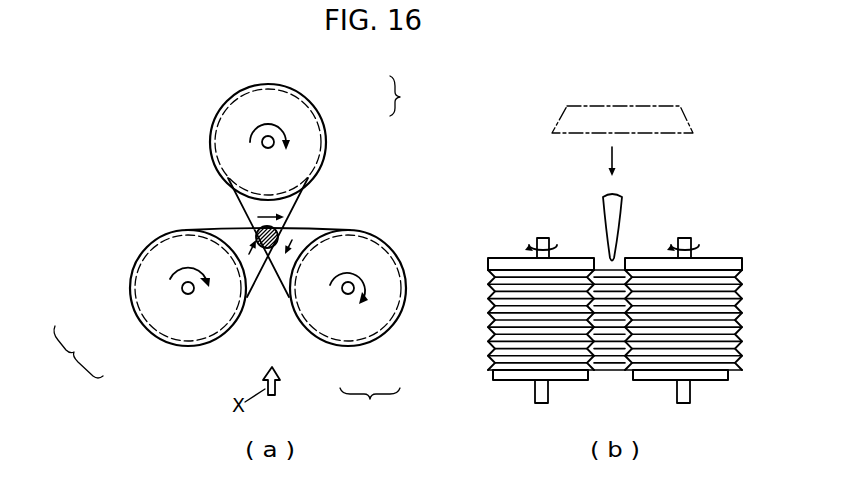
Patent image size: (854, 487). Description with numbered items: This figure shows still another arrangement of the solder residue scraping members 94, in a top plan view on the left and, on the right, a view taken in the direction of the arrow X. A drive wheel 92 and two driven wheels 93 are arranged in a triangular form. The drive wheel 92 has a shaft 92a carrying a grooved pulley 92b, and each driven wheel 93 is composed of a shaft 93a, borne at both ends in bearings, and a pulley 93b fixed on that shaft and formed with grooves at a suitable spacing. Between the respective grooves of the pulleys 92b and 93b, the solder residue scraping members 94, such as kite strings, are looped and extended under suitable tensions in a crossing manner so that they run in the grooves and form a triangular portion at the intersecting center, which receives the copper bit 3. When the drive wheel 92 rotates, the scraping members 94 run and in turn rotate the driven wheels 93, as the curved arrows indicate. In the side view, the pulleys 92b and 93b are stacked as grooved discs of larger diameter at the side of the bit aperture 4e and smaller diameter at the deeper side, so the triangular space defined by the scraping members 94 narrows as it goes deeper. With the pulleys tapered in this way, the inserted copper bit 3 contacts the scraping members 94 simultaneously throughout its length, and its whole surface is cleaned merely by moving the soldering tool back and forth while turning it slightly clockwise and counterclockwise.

The copper bit 3 is at (276, 225).
The bit aperture 4e is at (677, 118).
The drive wheel 92 is at (75, 354).
The shaft 92a is at (184, 290).
The pulley 92b is at (160, 340).
The driven wheel 93 is at (382, 248).
The shaft 93a is at (272, 138).
The pulley 93b is at (320, 120).
The solder residue scraping members 94 is at (236, 194).